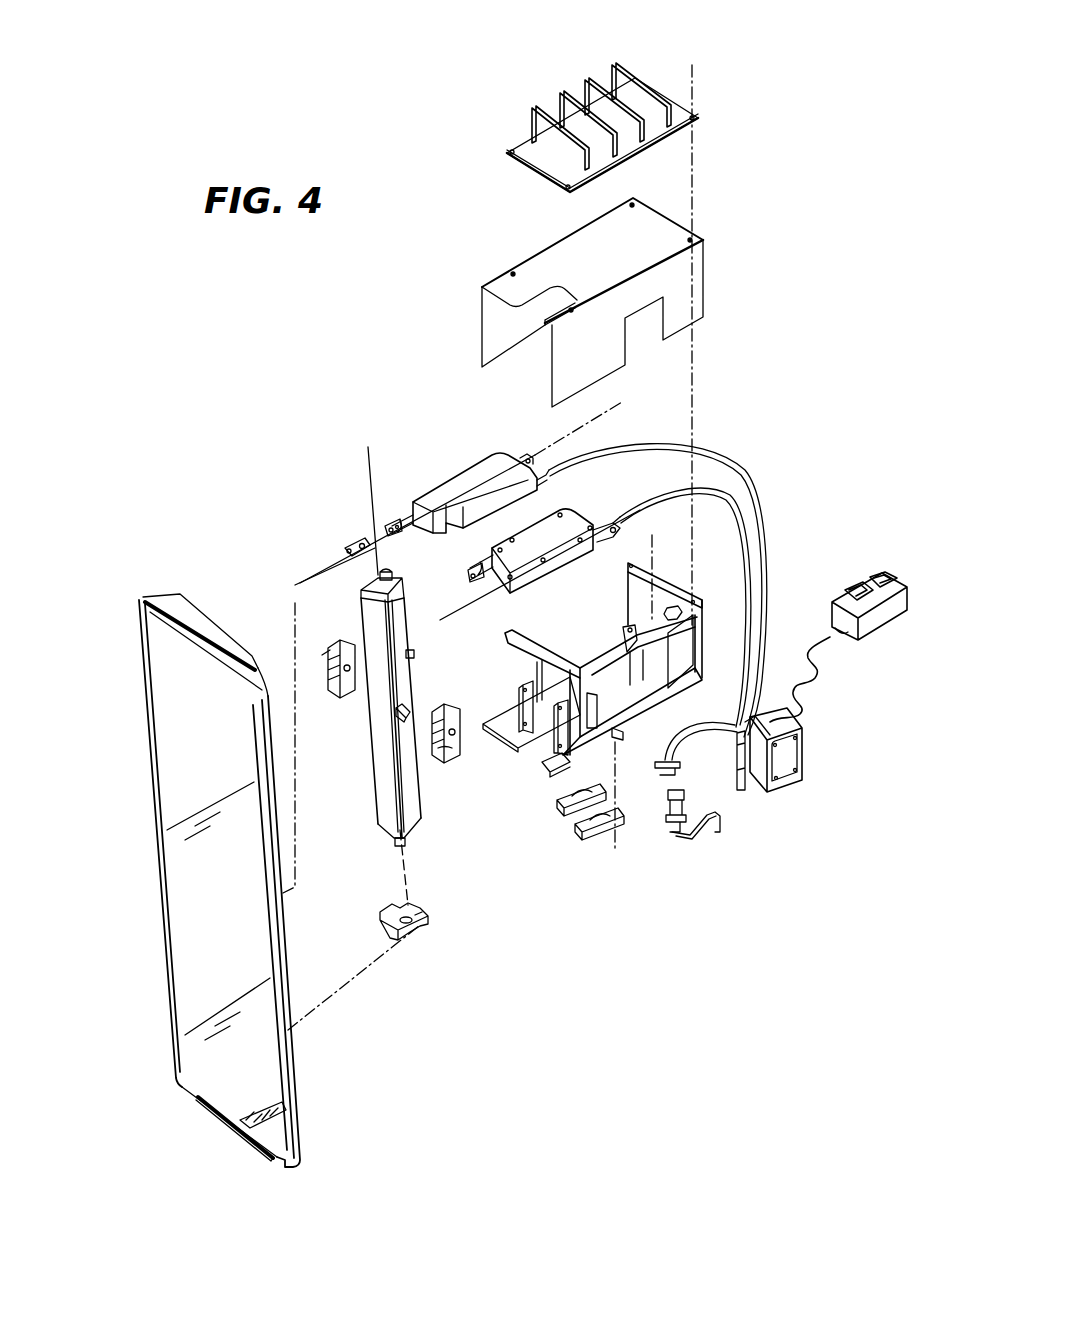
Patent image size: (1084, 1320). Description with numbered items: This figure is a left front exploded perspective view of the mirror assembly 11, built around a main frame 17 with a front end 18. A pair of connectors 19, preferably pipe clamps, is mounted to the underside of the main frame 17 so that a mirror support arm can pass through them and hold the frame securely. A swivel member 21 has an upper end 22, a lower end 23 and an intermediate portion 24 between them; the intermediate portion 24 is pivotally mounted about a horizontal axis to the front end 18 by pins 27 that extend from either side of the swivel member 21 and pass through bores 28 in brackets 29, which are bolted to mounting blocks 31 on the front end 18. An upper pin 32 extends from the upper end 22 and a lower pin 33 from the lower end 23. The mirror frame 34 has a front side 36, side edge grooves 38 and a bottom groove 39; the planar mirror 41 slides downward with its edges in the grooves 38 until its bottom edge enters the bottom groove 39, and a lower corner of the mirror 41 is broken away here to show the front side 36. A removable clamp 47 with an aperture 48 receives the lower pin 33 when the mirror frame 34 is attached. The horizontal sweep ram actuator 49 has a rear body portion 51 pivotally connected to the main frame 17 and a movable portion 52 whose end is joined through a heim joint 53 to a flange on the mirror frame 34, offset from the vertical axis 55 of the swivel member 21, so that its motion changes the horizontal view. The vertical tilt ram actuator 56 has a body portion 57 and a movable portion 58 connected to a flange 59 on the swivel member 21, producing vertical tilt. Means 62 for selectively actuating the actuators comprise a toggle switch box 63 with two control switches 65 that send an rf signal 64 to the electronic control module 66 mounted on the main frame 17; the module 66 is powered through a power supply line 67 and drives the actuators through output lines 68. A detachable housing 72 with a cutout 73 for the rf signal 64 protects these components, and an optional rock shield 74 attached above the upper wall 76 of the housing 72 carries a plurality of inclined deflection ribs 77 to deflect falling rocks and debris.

The mirror assembly 11 is at (440, 1092).
The main frame 17 is at (622, 690).
The front end 18 is at (560, 770).
The connectors 19 is at (560, 812).
The swivel member 21 is at (378, 710).
The upper end 22 is at (365, 583).
The lower end 23 is at (396, 845).
The intermediate portion 24 is at (362, 736).
The pins 27 is at (410, 708).
The bores 28 is at (456, 765).
The brackets 29 is at (330, 650).
The mounting blocks 31 is at (520, 690).
The upper pin 32 is at (393, 575).
The lower pin 33 is at (408, 842).
The mirror frame 34 is at (243, 878).
The front side 36 is at (253, 1148).
The side edge grooves 38 is at (160, 930).
The bottom groove 39 is at (263, 1162).
The planar mirror 41 is at (143, 597).
The removable clamp 47 is at (432, 952).
The aperture 48 is at (425, 920).
The horizontal sweep ram actuator 49 is at (433, 482).
The rear body portion 51 is at (510, 448).
The movable portion 52 is at (408, 510).
The heim joint 53 is at (355, 545).
The vertical axis 55 is at (368, 478).
The vertical tilt ram actuator 56 is at (532, 577).
The body portion 57 is at (598, 552).
The movable portion 58 is at (492, 590).
The flange 59 is at (412, 648).
The means for selectively actuating 62 is at (834, 693).
The toggle switch box 63 is at (876, 584).
The rf signal 64 is at (808, 705).
The control switches 65 is at (850, 592).
The electronic control module 66 is at (788, 790).
The power supply line 67 is at (700, 718).
The output lines 68 is at (735, 465).
The detachable housing 72 is at (627, 294).
The cutout 73 is at (698, 282).
The rock shield 74 is at (597, 105).
The upper wall 76 is at (555, 268).
The inclined deflection ribs 77 is at (540, 115).